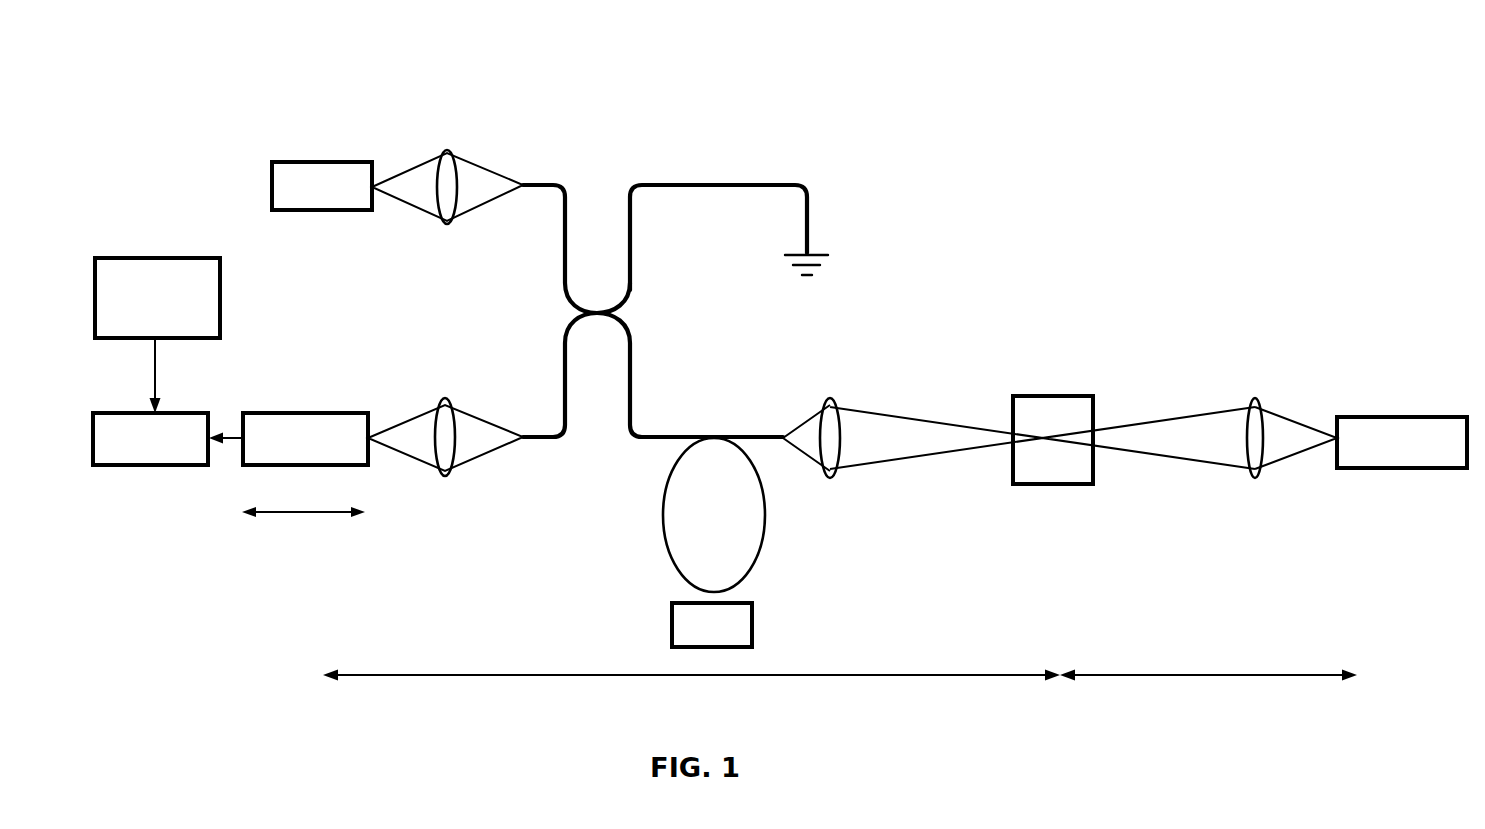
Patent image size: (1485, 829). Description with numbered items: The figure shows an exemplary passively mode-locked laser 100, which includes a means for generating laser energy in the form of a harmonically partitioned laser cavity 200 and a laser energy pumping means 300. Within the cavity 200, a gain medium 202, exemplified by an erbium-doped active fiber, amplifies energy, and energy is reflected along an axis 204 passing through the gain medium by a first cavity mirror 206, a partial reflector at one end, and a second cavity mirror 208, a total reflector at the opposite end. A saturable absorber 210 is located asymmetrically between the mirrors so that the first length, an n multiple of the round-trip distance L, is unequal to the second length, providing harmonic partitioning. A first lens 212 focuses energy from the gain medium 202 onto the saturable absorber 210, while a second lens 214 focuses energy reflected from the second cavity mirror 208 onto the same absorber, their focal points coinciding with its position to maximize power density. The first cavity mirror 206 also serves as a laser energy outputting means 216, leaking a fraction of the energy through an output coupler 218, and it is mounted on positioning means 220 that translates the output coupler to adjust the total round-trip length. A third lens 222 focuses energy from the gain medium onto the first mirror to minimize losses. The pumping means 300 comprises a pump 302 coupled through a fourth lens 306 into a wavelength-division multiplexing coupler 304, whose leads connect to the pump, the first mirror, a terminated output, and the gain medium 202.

The passively mode-locked laser 100 is at (1037, 197).
The laser cavity 200 is at (892, 572).
The gain medium 202 is at (764, 542).
The axis 204 is at (305, 512).
The first cavity mirror 206 is at (327, 413).
The second cavity mirror 208 is at (1388, 417).
The saturable absorber 210 is at (1077, 397).
The first lens 212 is at (838, 400).
The second lens 214 is at (1256, 478).
The laser energy outputting means 216 is at (227, 408).
The output coupler 218 is at (175, 465).
The positioning means 220 is at (220, 287).
The third lens 222 is at (447, 467).
The laser energy pumping means 300 is at (607, 188).
The pump 302 is at (312, 162).
The wavelength-division multiplexing coupler 304 is at (631, 283).
The fourth lens 306 is at (449, 152).